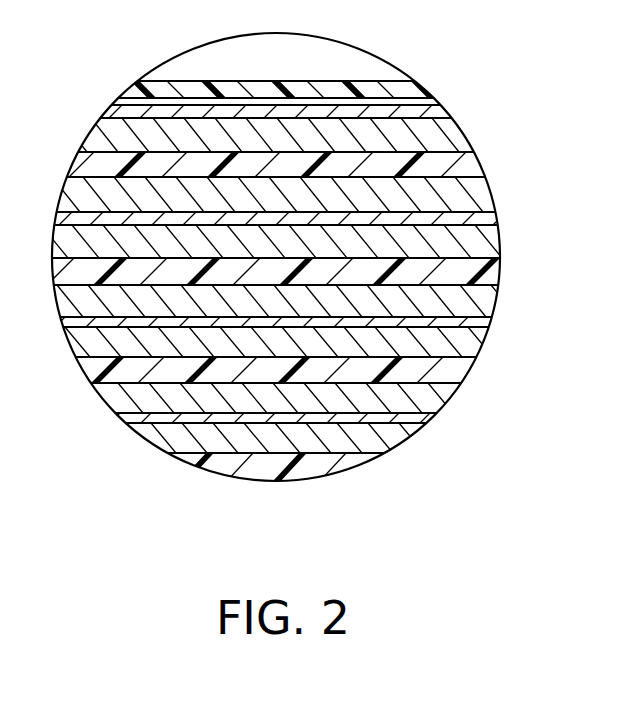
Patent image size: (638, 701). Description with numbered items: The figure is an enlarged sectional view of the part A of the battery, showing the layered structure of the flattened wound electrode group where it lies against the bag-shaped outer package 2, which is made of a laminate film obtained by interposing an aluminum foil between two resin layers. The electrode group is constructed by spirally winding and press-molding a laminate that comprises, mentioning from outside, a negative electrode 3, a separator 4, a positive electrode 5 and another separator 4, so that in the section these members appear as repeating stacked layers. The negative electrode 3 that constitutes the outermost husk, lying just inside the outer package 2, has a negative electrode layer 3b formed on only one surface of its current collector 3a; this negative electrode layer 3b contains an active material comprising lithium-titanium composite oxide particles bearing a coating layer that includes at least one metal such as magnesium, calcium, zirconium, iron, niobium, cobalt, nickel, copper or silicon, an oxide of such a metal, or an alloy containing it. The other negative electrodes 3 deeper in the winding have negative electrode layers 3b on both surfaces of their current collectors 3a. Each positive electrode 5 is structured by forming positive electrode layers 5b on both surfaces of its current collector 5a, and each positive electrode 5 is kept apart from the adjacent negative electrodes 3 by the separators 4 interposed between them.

The part A is at (173, 70).
The outer package 2 is at (427, 83).
The negative electrode 3 is at (552, 52).
The current collector 3a is at (453, 112).
The negative electrode layer 3b is at (453, 137).
The separator 4 is at (82, 165).
The positive electrode 5 is at (590, 145).
The current collector 5a is at (480, 220).
The positive electrode layer 5b is at (477, 187).